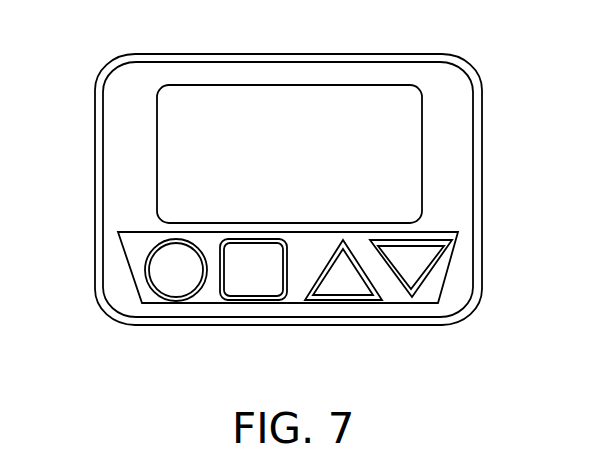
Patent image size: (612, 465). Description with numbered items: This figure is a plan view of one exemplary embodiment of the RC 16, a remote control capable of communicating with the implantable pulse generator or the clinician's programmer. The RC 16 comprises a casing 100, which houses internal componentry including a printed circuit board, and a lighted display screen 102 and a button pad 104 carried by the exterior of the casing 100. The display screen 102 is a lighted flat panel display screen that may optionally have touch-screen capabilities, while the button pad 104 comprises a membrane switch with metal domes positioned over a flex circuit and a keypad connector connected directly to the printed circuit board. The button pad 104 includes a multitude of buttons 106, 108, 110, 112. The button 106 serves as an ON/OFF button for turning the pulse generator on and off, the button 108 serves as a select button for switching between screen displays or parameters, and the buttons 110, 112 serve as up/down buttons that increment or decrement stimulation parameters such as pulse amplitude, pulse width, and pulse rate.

The RC 16 is at (466, 65).
The casing 100 is at (457, 143).
The display screen 102 is at (305, 100).
The button pad 104 is at (138, 252).
The button 106 is at (177, 282).
The button 108 is at (263, 282).
The button 110 is at (352, 282).
The button 112 is at (410, 270).